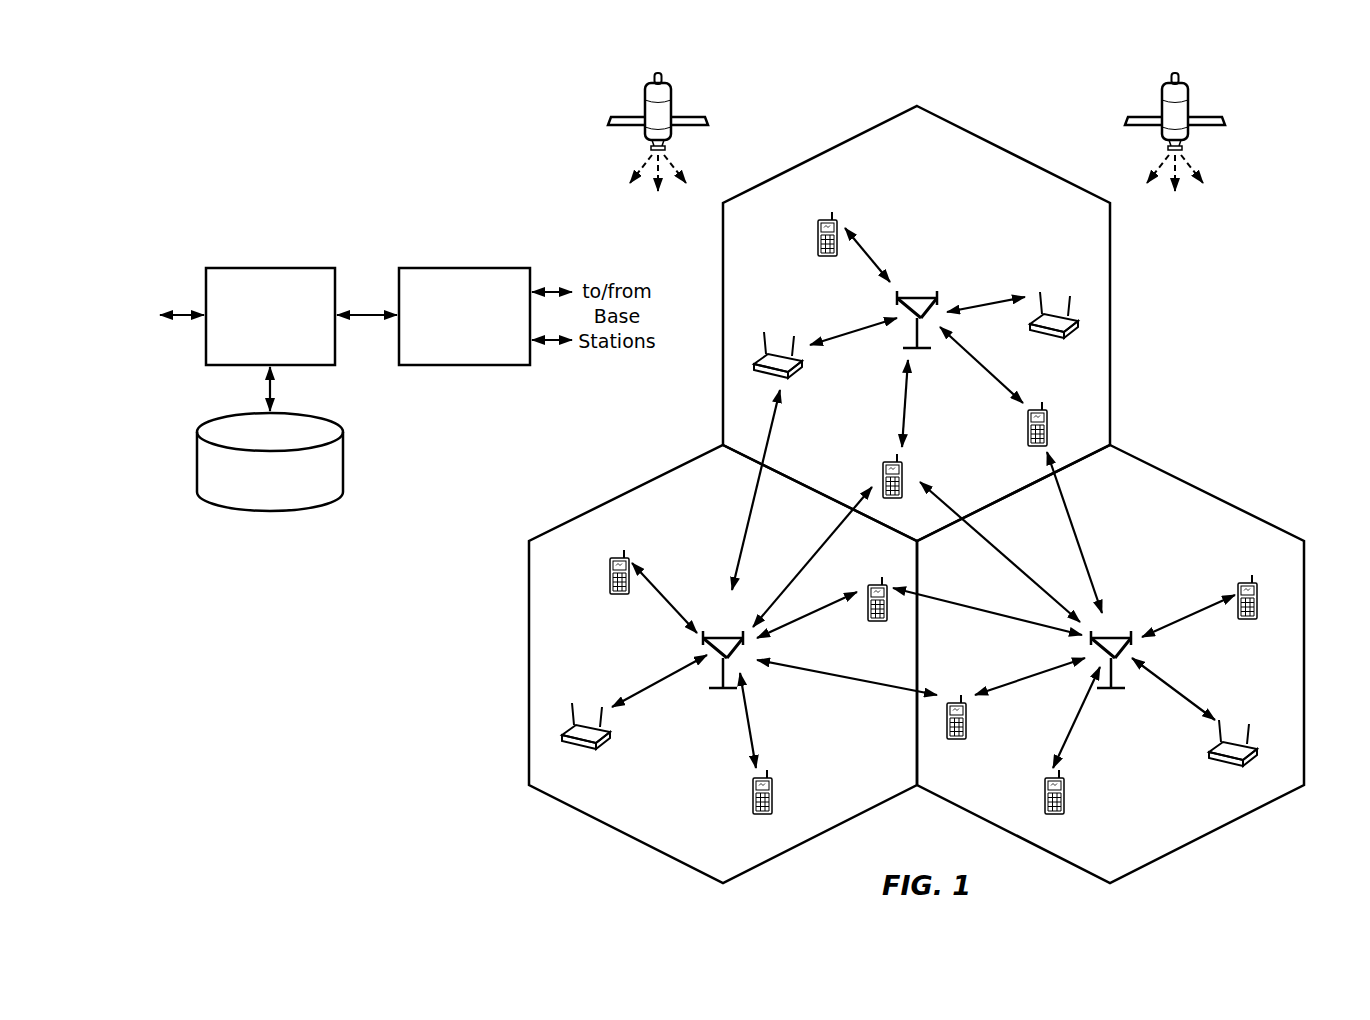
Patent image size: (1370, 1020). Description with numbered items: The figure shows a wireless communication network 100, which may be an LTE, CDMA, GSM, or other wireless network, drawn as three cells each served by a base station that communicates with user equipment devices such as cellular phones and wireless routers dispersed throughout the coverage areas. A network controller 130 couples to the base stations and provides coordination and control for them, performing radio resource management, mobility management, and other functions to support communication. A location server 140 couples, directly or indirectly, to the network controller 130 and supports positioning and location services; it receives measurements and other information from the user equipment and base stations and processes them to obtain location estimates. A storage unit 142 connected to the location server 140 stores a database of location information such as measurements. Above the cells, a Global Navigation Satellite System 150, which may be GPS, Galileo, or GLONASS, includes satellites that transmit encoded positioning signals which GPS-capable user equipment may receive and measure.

The wireless communication network 100 is at (1186, 363).
The network controller 130 is at (459, 268).
The location server 140 is at (266, 268).
The storage unit 142 is at (306, 413).
The Global Navigation Satellite System 150 is at (594, 112).